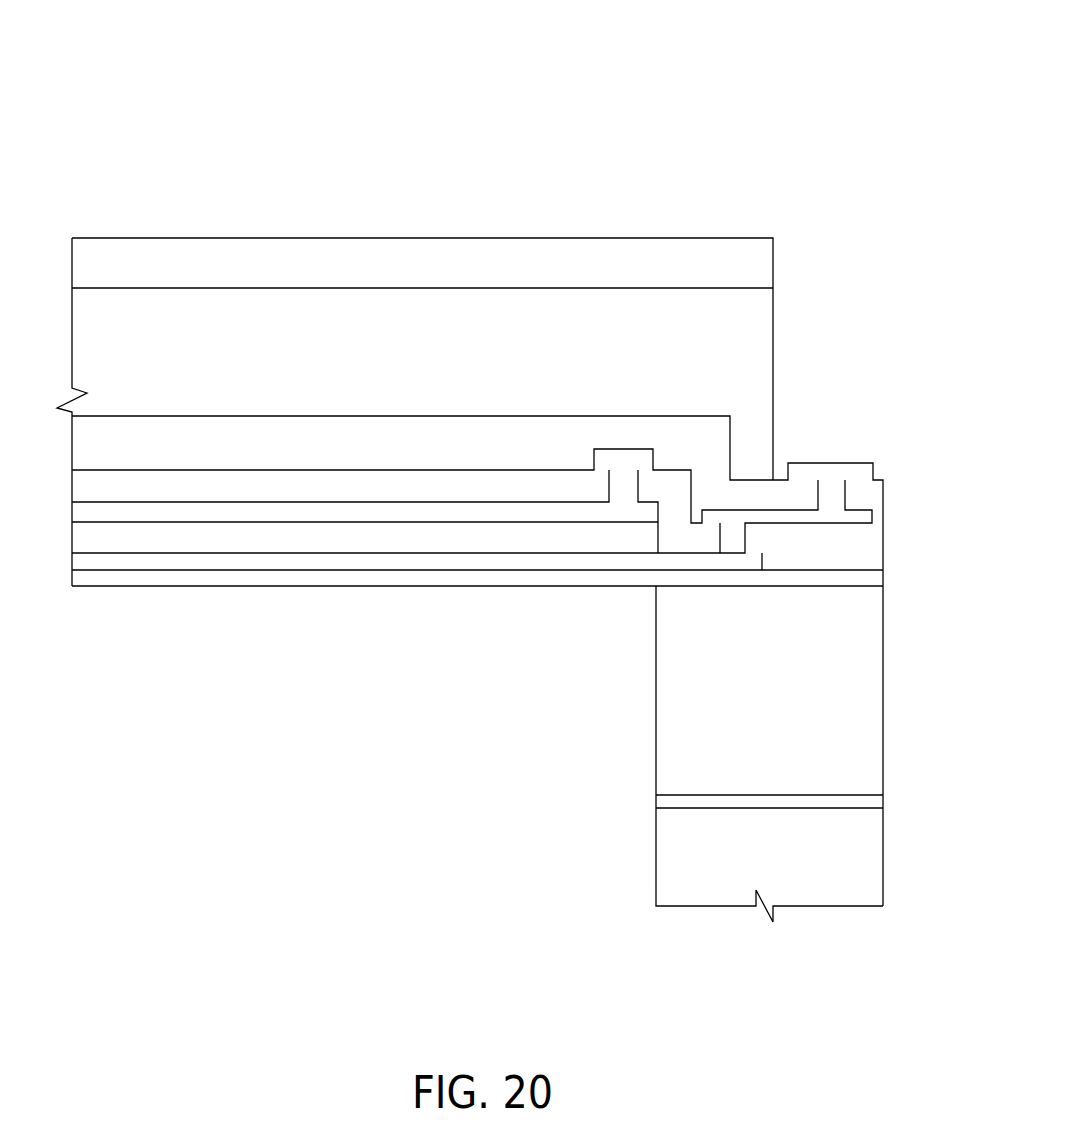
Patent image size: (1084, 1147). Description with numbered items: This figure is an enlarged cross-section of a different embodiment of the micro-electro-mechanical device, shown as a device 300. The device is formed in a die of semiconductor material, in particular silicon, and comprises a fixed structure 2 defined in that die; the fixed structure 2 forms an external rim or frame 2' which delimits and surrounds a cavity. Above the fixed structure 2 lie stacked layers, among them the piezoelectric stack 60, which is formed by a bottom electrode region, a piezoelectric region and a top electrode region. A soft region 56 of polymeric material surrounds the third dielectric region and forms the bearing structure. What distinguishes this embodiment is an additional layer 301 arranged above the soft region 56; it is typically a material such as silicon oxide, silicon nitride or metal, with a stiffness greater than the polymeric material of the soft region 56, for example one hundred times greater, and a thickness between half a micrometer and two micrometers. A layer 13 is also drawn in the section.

The device 300 is at (503, 466).
The additional layer 301 is at (313, 253).
The soft region 56 is at (403, 320).
The shielding layer 13 is at (322, 413).
The piezoelectric stack 60 is at (298, 503).
The fixed structure 2 is at (802, 744).
The external rim or frame 2' is at (803, 680).